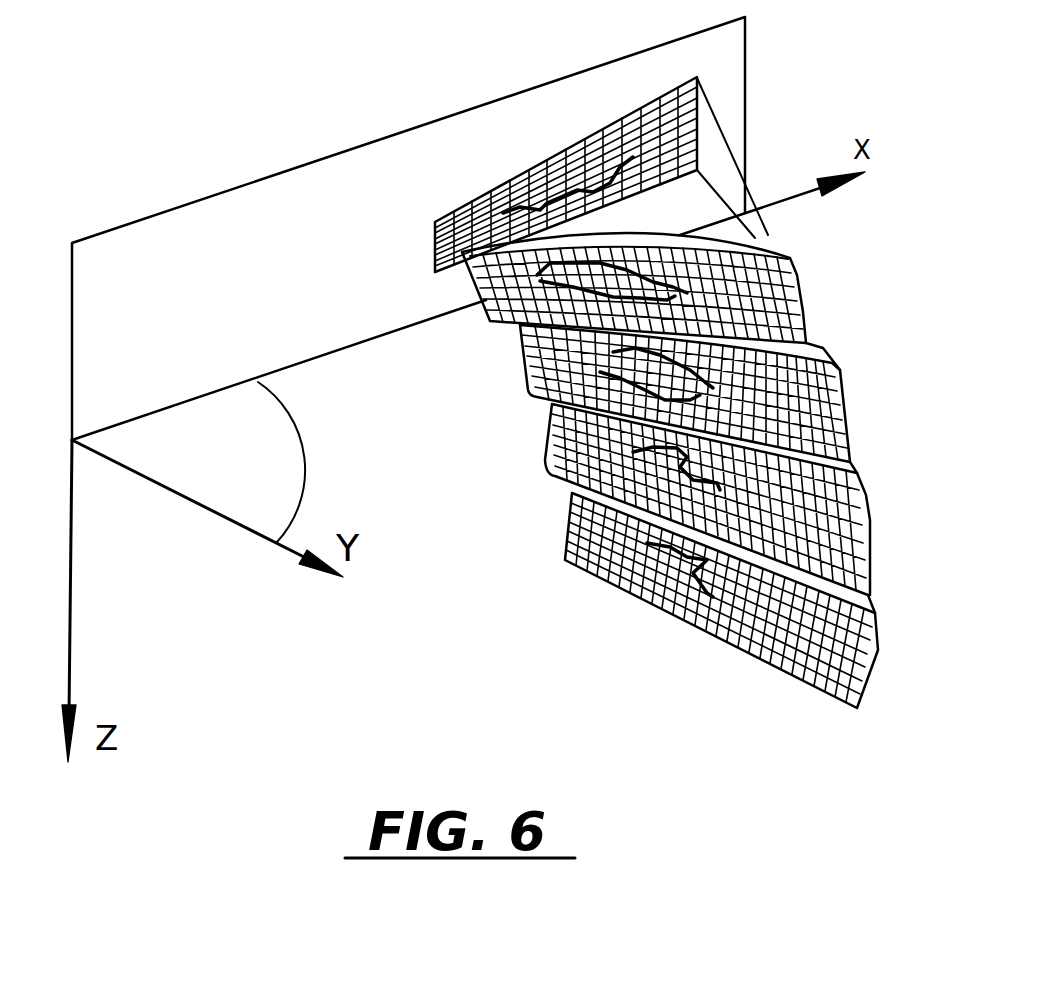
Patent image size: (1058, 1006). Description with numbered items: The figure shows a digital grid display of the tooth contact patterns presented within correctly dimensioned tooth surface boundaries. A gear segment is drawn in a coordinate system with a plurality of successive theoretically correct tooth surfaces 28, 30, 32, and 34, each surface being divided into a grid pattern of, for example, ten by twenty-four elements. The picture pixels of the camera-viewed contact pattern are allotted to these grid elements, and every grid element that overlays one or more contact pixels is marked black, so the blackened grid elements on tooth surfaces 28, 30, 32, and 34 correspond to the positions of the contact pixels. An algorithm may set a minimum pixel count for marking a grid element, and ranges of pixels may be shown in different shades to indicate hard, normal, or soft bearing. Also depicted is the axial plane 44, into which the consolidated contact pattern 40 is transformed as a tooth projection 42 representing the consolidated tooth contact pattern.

The tooth surface 28 is at (797, 297).
The tooth surface 30 is at (848, 393).
The tooth surface 32 is at (872, 542).
The tooth surface 34 is at (862, 685).
The contact pattern 40 is at (547, 187).
The tooth projection 42 is at (640, 122).
The axial plane 44 is at (737, 78).